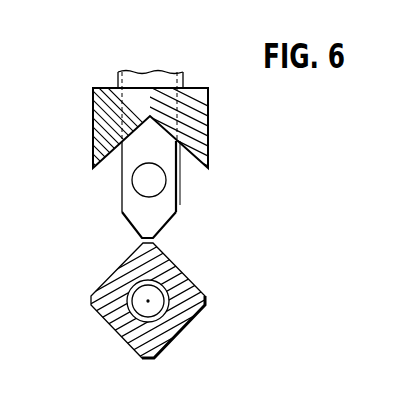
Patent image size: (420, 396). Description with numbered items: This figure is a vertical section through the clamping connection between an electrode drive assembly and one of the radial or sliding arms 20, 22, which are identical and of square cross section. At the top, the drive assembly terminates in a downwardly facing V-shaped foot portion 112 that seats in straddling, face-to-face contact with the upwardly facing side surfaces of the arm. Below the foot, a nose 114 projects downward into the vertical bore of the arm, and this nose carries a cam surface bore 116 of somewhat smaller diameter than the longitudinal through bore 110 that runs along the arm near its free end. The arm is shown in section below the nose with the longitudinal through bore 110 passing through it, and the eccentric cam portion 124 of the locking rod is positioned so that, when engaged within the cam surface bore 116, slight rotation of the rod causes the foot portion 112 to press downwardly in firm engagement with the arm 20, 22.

The V-shaped foot portion 112 is at (93, 99).
The nose 114 is at (149, 155).
The cam surface bore 116 is at (145, 195).
The eccentric cam portion 124 is at (150, 296).
The longitudinal through bore 110 is at (166, 315).
The radial or sliding arm 20 is at (142, 298).
The radial or sliding arm 22 is at (142, 298).